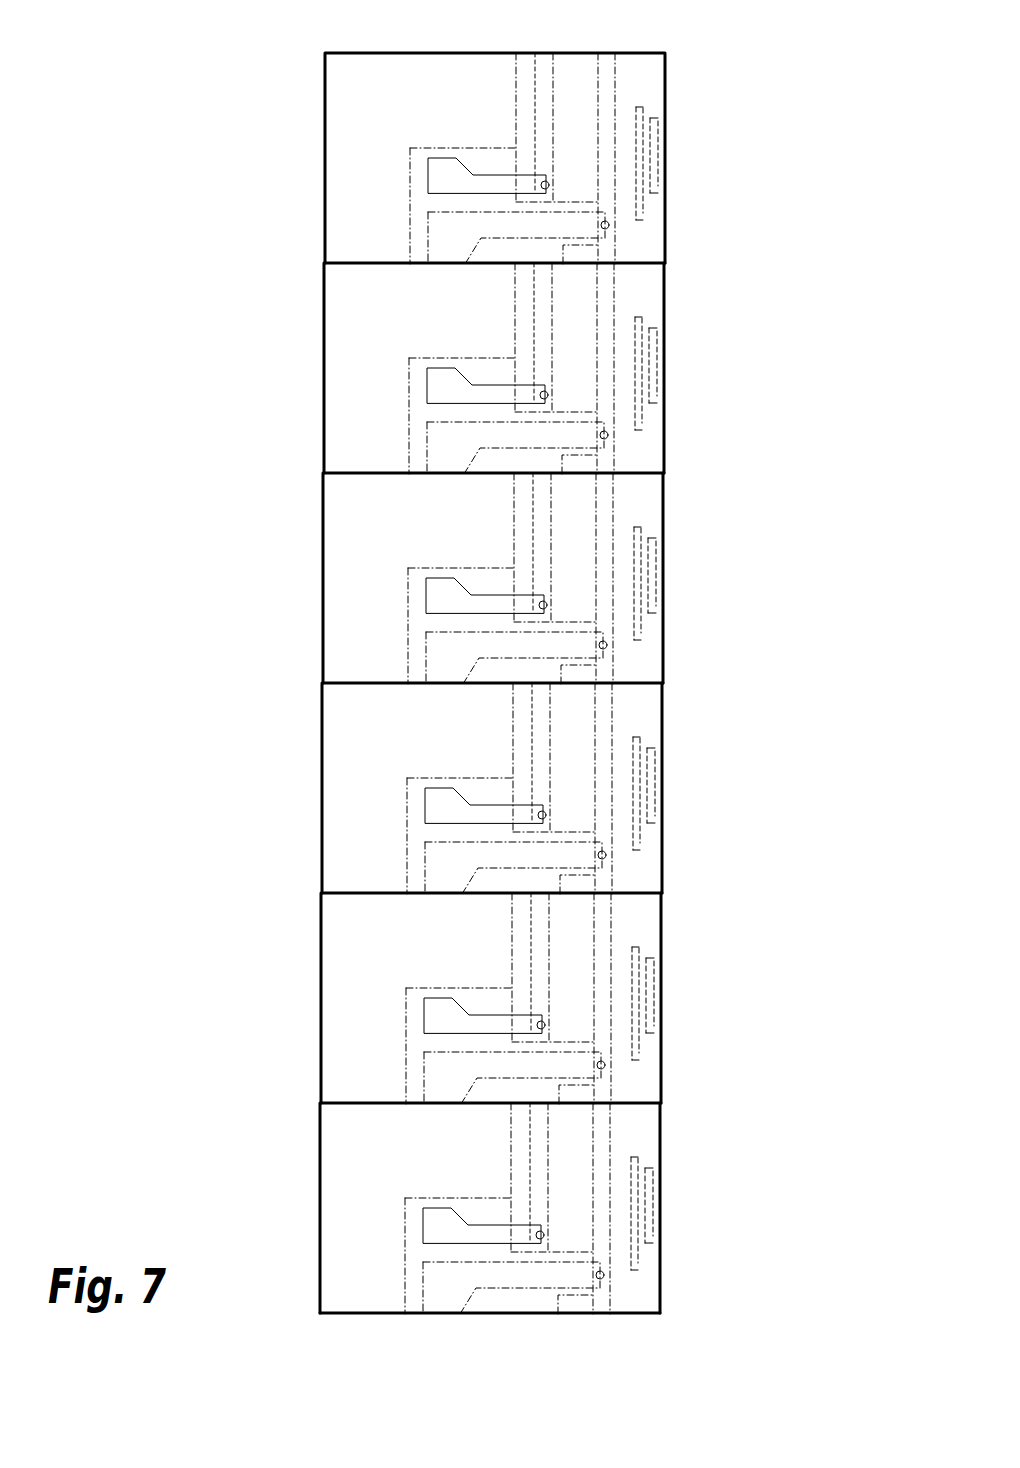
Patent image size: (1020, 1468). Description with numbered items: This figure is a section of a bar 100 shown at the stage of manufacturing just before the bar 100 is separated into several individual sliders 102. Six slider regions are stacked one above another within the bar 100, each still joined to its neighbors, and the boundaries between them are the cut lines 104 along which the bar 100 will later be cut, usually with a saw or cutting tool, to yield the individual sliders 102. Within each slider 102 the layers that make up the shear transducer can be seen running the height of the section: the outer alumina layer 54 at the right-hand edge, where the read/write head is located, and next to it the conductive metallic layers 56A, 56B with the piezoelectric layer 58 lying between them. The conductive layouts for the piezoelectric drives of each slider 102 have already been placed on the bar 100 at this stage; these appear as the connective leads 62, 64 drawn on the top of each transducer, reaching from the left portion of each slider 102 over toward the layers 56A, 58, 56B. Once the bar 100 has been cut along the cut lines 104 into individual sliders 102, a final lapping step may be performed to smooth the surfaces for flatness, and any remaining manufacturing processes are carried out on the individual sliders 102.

The bar 100 is at (184, 263).
The slider 102 is at (444, 661).
The cut line 104 is at (653, 263).
The outer alumina layer 54 is at (662, 144).
The conductive metallic layer 56A is at (504, 107).
The conductive metallic layer 56B is at (629, 140).
The piezoelectric layer 58 is at (566, 105).
The connective lead 62 is at (442, 201).
The connective lead 64 is at (472, 235).